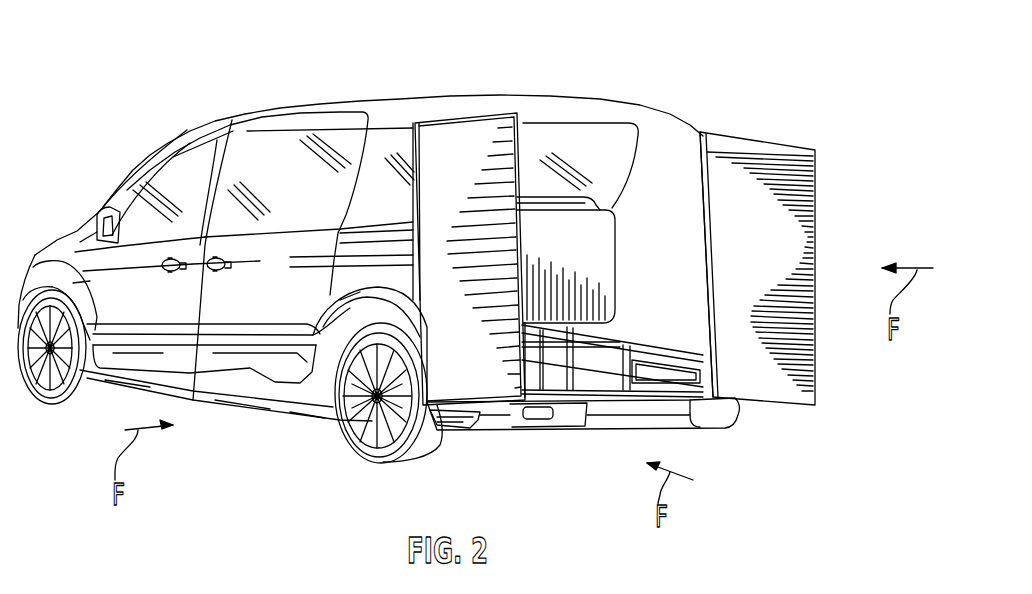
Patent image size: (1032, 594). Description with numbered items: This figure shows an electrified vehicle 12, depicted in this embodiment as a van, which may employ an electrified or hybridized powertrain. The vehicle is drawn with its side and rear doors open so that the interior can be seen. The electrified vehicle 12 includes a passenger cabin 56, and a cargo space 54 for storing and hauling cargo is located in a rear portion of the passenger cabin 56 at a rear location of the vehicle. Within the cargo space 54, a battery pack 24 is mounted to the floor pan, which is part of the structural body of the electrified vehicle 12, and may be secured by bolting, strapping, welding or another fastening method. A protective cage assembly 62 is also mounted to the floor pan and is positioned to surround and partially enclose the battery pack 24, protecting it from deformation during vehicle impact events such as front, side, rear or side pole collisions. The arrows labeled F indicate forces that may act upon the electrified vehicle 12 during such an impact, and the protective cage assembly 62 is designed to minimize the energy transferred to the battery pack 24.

The electrified vehicle 12 is at (428, 52).
The battery pack 24 is at (528, 350).
The cargo space 54 is at (650, 278).
The passenger cabin 56 is at (298, 194).
The protective cage assembly 62 is at (585, 372).